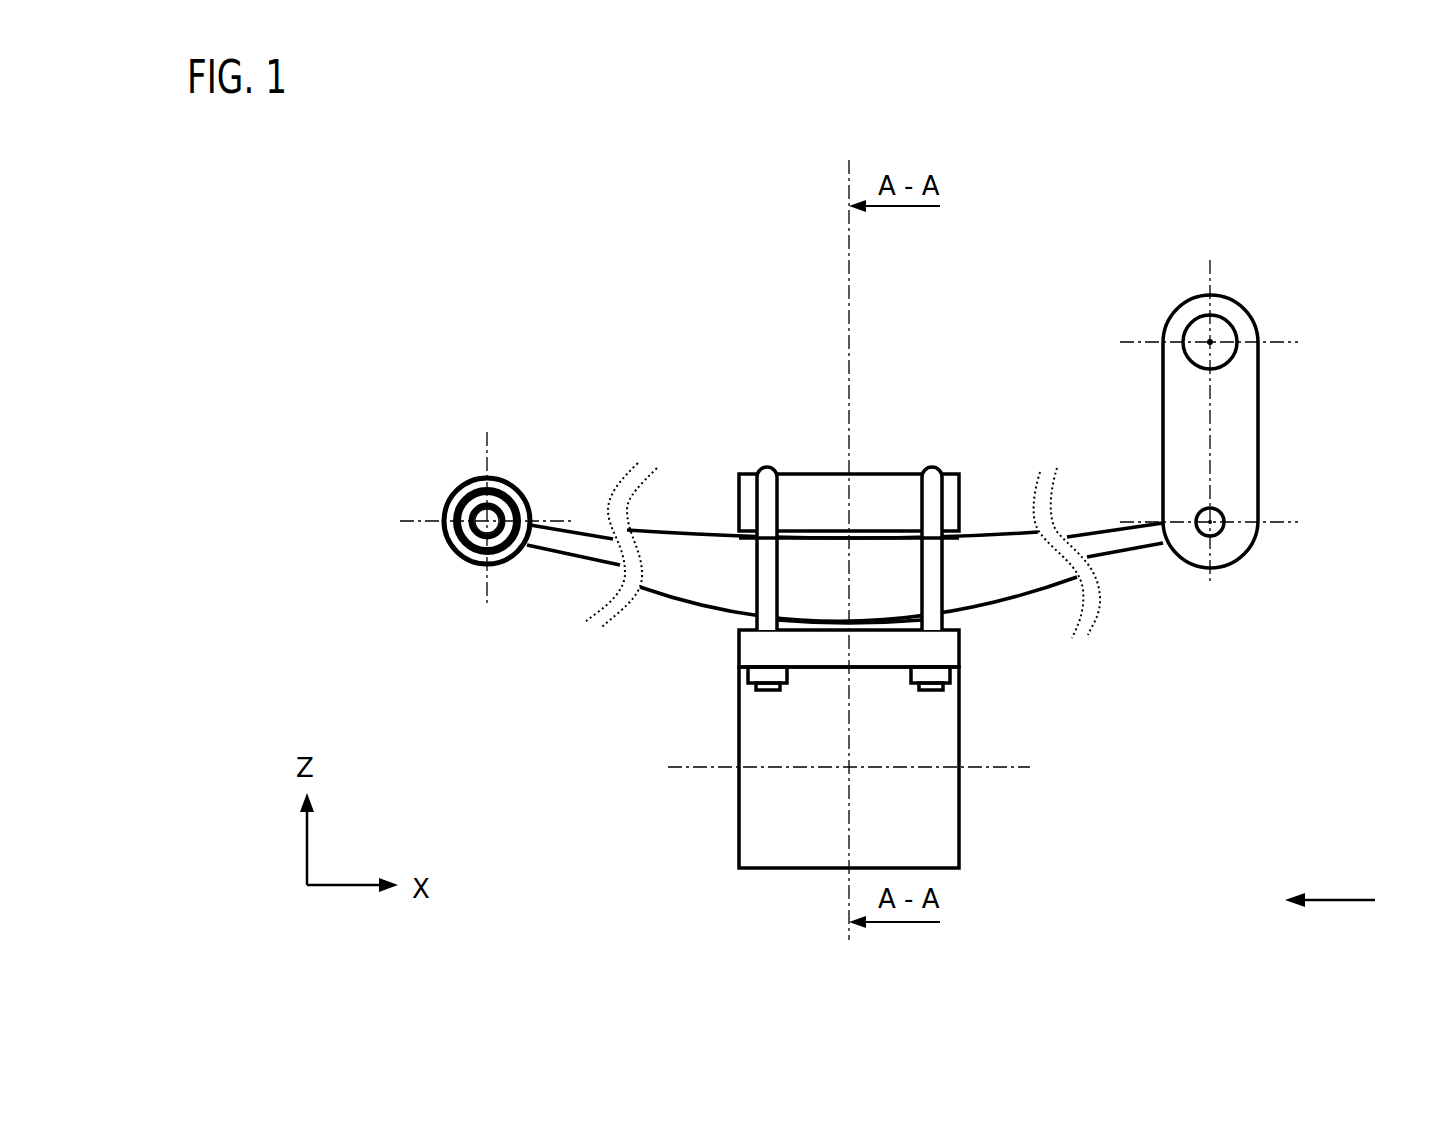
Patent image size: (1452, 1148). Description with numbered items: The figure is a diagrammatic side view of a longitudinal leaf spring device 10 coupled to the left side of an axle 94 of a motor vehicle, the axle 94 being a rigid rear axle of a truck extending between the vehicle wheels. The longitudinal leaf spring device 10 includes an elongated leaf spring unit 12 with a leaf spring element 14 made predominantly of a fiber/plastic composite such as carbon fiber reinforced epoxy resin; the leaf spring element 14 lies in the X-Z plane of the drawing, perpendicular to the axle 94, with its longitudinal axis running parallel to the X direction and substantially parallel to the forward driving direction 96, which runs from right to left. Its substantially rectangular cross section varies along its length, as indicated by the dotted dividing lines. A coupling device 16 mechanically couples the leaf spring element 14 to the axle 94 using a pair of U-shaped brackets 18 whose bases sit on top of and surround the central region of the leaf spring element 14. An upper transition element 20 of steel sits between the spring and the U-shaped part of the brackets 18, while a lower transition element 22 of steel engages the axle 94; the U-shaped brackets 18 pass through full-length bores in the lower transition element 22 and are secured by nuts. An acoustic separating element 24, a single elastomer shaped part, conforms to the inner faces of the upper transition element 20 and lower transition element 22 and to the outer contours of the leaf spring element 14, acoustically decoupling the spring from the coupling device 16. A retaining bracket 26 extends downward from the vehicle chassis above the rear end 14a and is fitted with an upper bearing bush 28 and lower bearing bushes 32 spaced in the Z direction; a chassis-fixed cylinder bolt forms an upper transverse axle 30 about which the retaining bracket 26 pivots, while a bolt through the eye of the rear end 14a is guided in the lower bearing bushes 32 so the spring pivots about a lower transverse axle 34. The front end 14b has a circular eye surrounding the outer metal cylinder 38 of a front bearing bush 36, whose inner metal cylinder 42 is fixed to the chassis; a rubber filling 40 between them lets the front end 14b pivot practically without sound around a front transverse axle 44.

The longitudinal leaf spring device 10 is at (992, 223).
The leaf spring unit 12 is at (685, 440).
The leaf spring element 14 is at (685, 580).
The rear end 14a is at (1148, 546).
The front end 14b is at (538, 535).
The coupling device 16 is at (879, 603).
The U-shaped brackets 18 is at (767, 470).
The upper transition element 20 is at (837, 505).
The lower transition element 22 is at (827, 654).
The acoustic separating element 24 is at (877, 537).
The retaining bracket 26 is at (1188, 412).
The upper bearing bush 28 is at (1233, 327).
The upper transverse axle 30 is at (1208, 340).
The lower bearing bushes 32 is at (1225, 512).
The lower transverse axle 34 is at (1205, 520).
The front bearing bush 36 is at (465, 525).
The outer metal cylinder 38 is at (515, 485).
The rubber filling 40 is at (447, 502).
The inner metal cylinder 42 is at (505, 565).
The front transverse axle 44 is at (487, 519).
The axle 94 is at (922, 802).
The forward driving direction 96 is at (1338, 898).